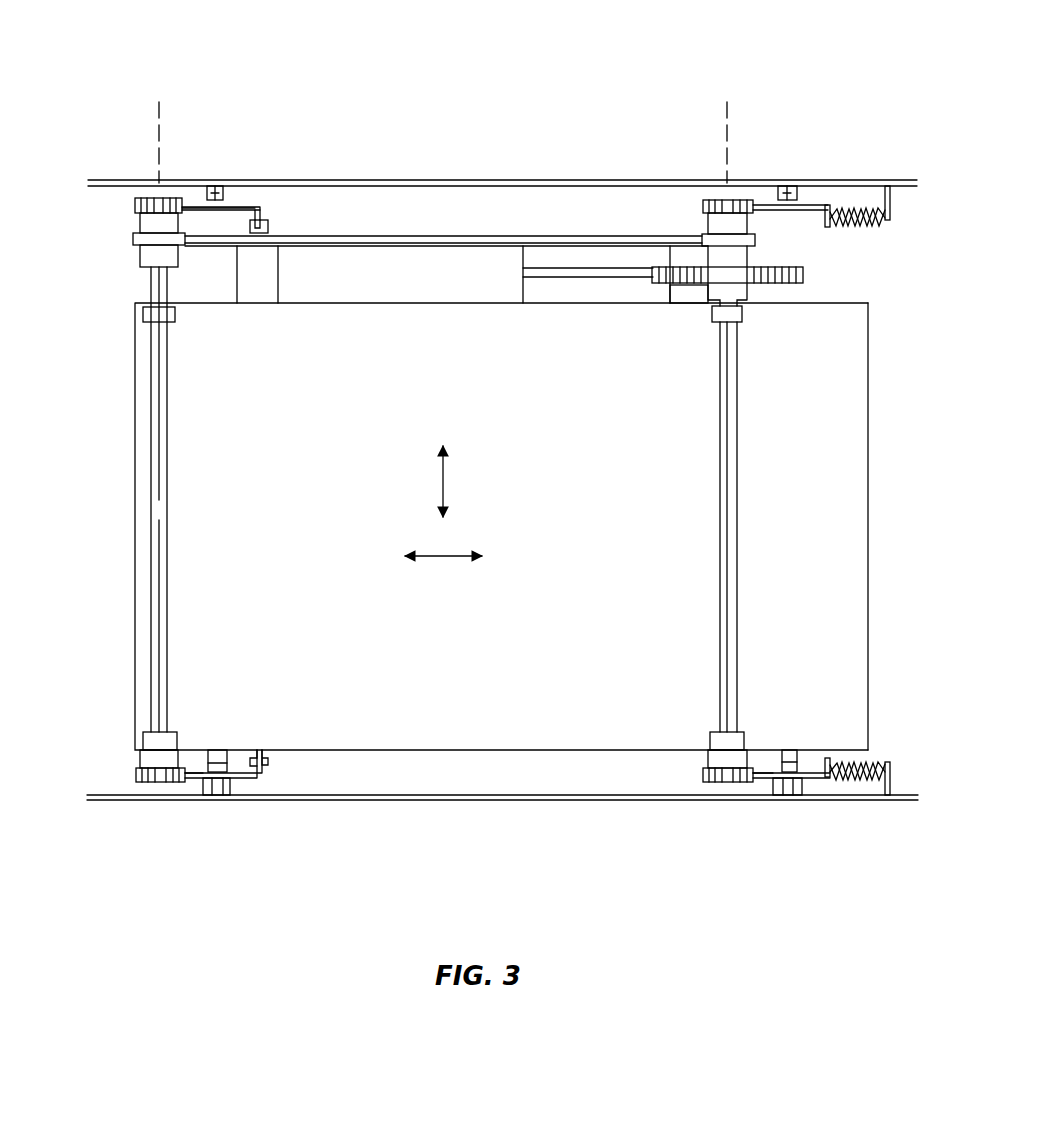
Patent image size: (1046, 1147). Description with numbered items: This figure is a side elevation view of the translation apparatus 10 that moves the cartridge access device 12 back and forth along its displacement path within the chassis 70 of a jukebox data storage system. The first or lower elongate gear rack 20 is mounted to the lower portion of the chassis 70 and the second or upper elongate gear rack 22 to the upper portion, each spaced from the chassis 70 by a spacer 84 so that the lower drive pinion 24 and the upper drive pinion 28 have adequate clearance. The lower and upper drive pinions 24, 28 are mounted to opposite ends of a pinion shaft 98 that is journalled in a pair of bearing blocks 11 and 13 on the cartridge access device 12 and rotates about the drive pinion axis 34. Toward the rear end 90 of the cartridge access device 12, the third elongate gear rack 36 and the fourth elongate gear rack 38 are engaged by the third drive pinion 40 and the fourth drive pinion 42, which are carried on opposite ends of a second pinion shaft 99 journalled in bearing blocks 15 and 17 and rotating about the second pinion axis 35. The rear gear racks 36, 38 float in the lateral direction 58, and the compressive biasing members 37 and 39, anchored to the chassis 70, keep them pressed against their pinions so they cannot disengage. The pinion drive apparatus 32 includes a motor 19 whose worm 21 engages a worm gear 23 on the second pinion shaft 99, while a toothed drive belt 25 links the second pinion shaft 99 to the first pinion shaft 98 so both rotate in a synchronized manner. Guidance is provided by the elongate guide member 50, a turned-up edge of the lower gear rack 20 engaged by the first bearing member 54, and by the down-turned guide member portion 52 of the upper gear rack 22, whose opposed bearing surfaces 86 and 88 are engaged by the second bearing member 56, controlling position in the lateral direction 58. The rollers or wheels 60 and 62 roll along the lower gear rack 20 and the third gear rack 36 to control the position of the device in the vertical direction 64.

The translation apparatus 10 is at (322, 50).
The bearing block 11 is at (143, 740).
The cartridge access device 12 is at (135, 527).
The bearing block 13 is at (176, 315).
The bearing block 15 is at (710, 742).
The bearing block 17 is at (743, 315).
The motor 19 is at (522, 288).
The first or lower elongate gear rack 20 is at (192, 787).
The worm 21 is at (688, 288).
The second or upper elongate gear rack 22 is at (194, 196).
The worm gear 23 is at (805, 272).
The first or lower drive pinion 24 is at (134, 777).
The toothed drive belt 25 is at (562, 235).
The second or upper drive pinion 28 is at (133, 208).
The pinion drive apparatus 32 is at (520, 261).
The drive pinion axis 34 is at (157, 122).
The second pinion axis 35 is at (726, 122).
The third elongate gear rack 36 is at (763, 787).
The compressive biasing member 37 is at (870, 762).
The fourth elongate gear rack 38 is at (765, 196).
The compressive biasing member 39 is at (857, 222).
The third drive pinion 40 is at (700, 776).
The fourth drive pinion 42 is at (700, 208).
The elongate guide member 50 is at (265, 773).
The elongate guide member 52 is at (258, 206).
The first bearing member 54 is at (283, 749).
The second bearing member 56 is at (275, 229).
The transverse or lateral direction 58 is at (445, 558).
The roller or wheel 60 is at (208, 755).
The roller or wheel 62 is at (782, 762).
The vertical direction 64 is at (445, 480).
The chassis 70 is at (864, 184).
The spacer 84 is at (230, 786).
The bearing surface 86 is at (245, 216).
The bearing surface 88 is at (264, 212).
The rear end 90 is at (869, 527).
The pinion shaft 98 is at (168, 527).
The second pinion shaft 99 is at (719, 527).